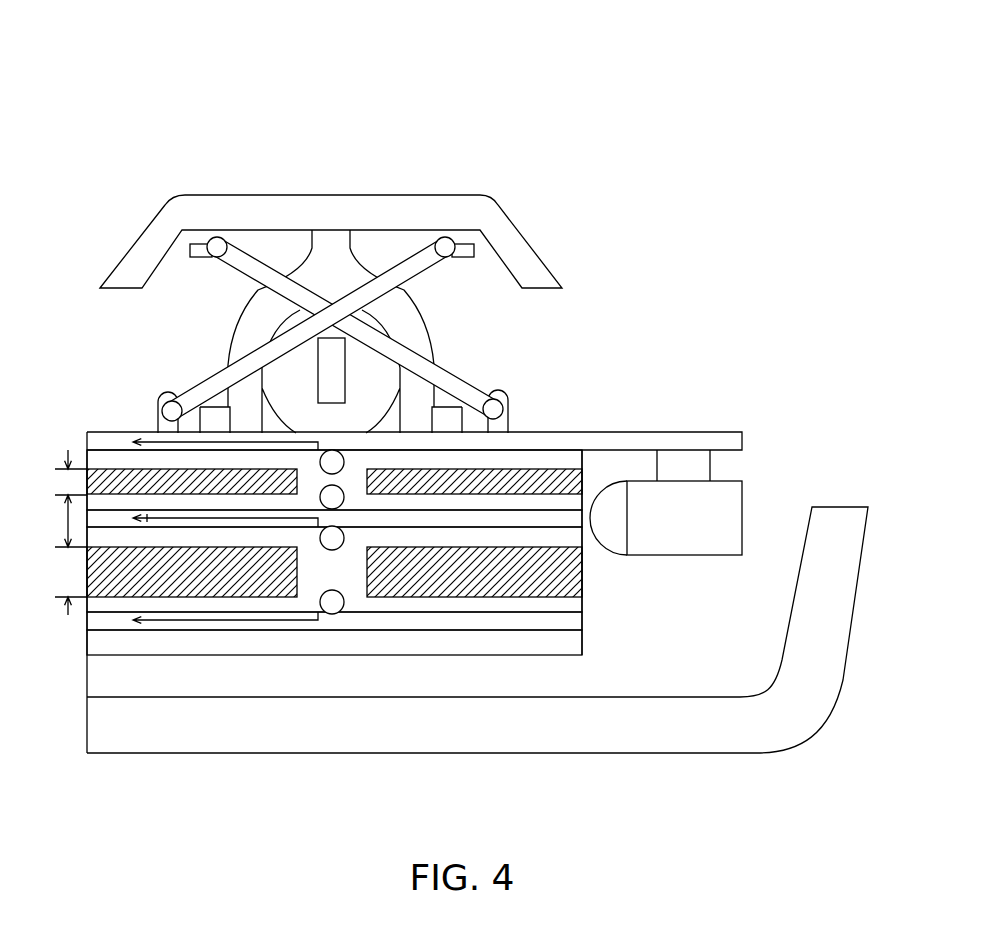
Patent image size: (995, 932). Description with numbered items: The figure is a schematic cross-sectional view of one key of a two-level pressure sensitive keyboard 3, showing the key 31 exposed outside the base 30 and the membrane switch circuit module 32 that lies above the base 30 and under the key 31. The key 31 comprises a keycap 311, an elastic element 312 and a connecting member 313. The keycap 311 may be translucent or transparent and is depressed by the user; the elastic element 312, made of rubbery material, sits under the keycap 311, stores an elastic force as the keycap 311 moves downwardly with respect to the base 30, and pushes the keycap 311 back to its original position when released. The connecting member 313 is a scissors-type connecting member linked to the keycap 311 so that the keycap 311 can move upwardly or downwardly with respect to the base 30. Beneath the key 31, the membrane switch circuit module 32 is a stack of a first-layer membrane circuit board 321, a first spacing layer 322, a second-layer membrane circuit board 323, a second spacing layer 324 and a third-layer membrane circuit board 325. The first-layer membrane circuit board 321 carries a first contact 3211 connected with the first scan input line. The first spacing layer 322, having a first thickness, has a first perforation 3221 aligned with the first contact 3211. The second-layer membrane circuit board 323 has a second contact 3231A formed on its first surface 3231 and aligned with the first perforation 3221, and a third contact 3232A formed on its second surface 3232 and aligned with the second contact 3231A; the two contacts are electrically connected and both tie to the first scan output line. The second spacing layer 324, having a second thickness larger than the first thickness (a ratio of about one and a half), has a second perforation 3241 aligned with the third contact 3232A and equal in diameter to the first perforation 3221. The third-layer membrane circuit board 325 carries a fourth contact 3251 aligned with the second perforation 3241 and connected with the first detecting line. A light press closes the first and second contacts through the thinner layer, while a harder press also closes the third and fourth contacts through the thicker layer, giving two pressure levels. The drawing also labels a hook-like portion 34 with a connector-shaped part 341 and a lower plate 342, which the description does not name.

The two-level pressure sensitive keyboard 3 is at (479, 23).
The base 30 is at (637, 722).
The key 31 is at (262, 133).
The keycap 311 is at (430, 213).
The elastic element 312 is at (329, 242).
The connecting member 313 is at (252, 262).
The membrane switch circuit module 32 is at (71, 628).
The first-layer membrane circuit board 321 is at (552, 455).
The first contact 3211 is at (340, 458).
The first spacing layer 322 is at (584, 481).
The second-layer membrane circuit board 323 is at (575, 520).
The first surface 3231 is at (521, 508).
The second contact 3231A is at (325, 492).
The second surface 3232 is at (197, 525).
The third contact 3232A is at (338, 550).
The first perforation 3221 is at (302, 495).
The second spacing layer 324 is at (557, 580).
The second perforation 3241 is at (358, 575).
The third-layer membrane circuit board 325 is at (583, 627).
The fourth contact 3251 is at (330, 604).
The housing hook 34 is at (708, 659).
The connector 341 is at (678, 532).
The support plate 342 is at (483, 641).